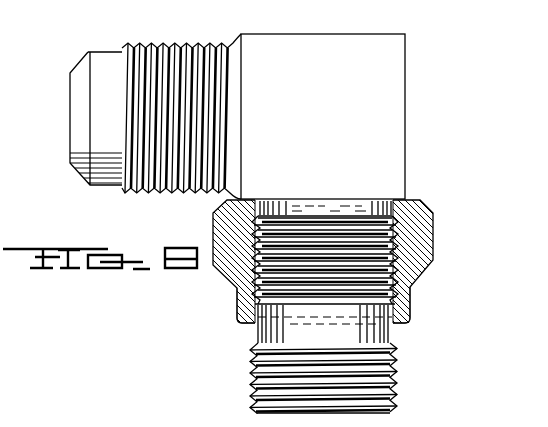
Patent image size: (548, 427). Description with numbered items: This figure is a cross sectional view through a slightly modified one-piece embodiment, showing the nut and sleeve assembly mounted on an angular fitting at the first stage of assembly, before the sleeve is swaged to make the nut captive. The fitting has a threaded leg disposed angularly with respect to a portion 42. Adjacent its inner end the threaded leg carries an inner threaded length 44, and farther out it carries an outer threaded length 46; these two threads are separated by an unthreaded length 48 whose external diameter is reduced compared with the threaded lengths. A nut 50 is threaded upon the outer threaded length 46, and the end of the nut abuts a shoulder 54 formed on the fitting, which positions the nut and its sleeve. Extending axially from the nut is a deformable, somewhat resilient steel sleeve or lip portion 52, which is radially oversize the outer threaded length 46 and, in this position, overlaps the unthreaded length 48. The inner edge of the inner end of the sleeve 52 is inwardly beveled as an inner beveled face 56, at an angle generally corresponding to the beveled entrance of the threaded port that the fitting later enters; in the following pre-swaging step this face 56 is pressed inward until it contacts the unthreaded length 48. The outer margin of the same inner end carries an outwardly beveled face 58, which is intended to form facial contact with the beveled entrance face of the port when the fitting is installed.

The portion 42 is at (113, 62).
The inner threaded length 44 is at (252, 385).
The outer threaded length 46 is at (426, 258).
The unthreaded length 48 is at (268, 332).
The nut 50 is at (428, 226).
The sleeve or lip portion 52 is at (411, 310).
The shoulder 54 is at (352, 208).
The inner beveled face 56 is at (401, 324).
The outwardly beveled face 58 is at (238, 324).